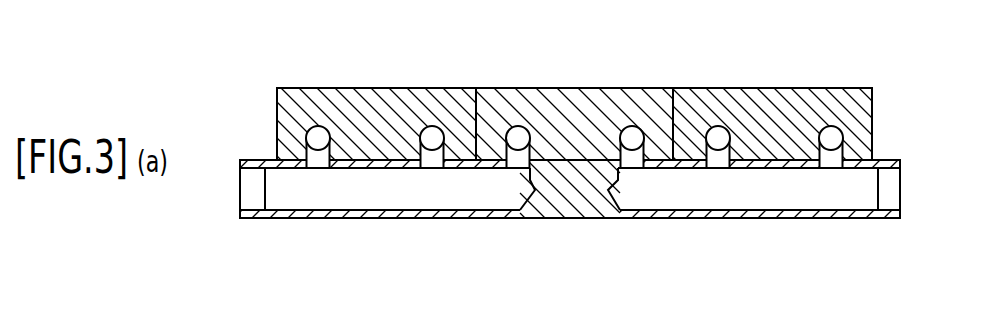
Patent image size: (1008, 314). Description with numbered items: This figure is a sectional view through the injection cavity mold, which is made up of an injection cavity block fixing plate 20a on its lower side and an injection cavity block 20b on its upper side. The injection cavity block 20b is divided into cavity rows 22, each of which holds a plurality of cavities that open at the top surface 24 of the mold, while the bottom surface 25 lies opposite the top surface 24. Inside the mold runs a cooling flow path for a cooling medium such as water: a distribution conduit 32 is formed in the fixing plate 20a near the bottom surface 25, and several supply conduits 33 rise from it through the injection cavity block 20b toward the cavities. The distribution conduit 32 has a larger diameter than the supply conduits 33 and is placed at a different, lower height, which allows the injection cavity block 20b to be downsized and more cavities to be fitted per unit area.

The injection cavity block fixing plate 20a is at (795, 213).
The injection cavity block 20b is at (865, 108).
The cavity row 22 is at (558, 84).
The top surface 24 is at (297, 88).
The bottom surface 25 is at (394, 220).
The distribution conduit 32 is at (294, 200).
The supply conduit 33 is at (318, 136).